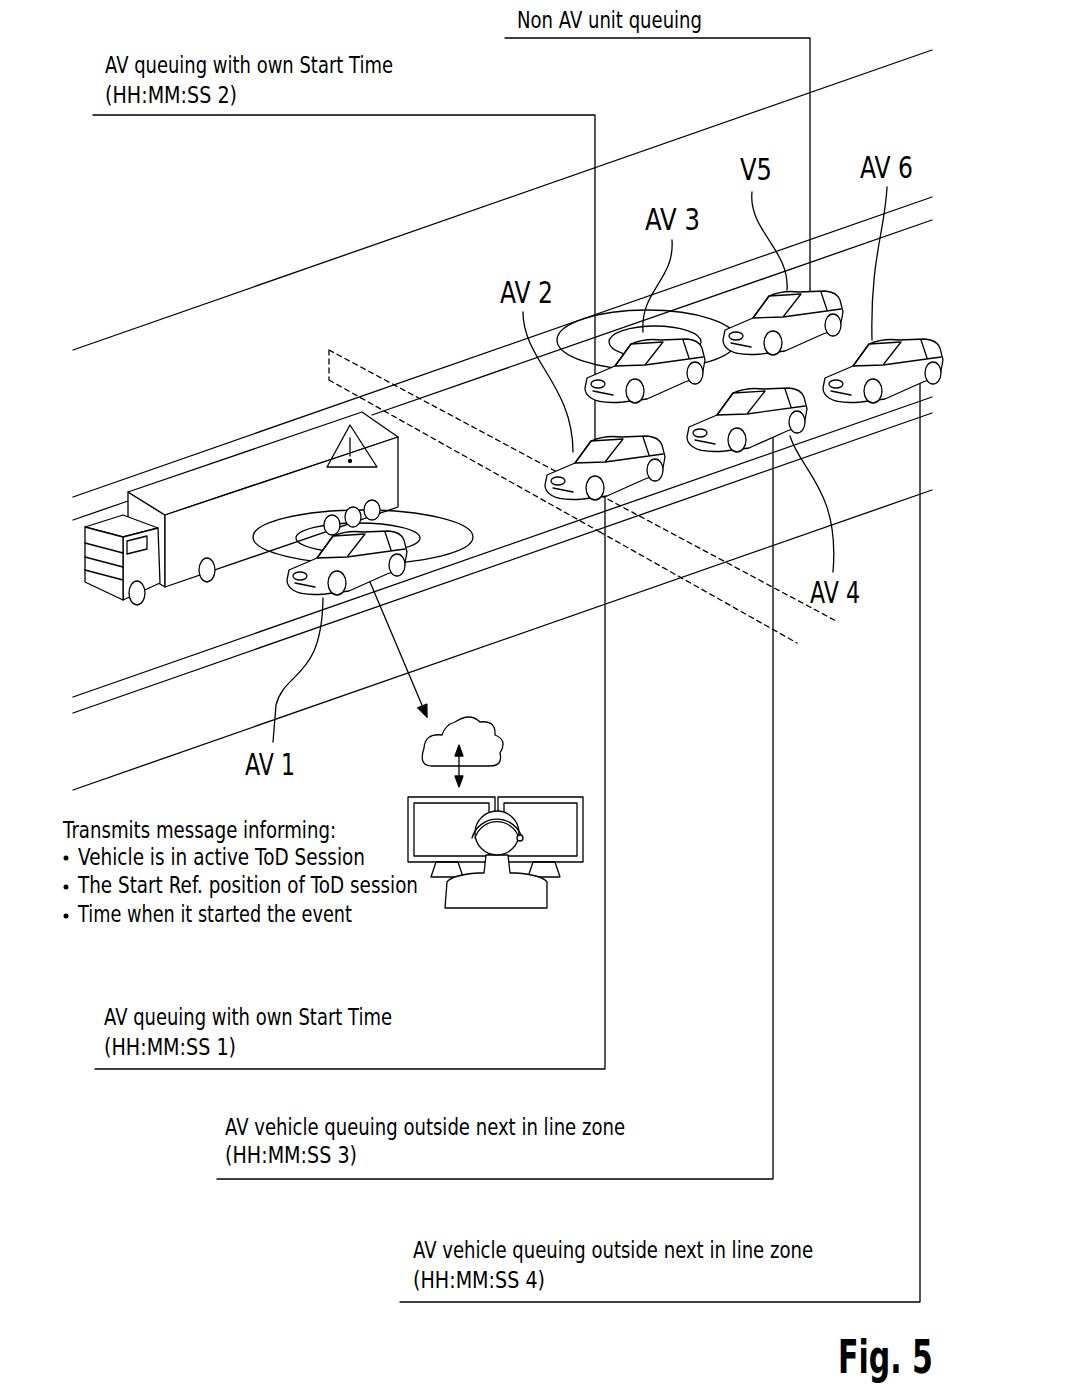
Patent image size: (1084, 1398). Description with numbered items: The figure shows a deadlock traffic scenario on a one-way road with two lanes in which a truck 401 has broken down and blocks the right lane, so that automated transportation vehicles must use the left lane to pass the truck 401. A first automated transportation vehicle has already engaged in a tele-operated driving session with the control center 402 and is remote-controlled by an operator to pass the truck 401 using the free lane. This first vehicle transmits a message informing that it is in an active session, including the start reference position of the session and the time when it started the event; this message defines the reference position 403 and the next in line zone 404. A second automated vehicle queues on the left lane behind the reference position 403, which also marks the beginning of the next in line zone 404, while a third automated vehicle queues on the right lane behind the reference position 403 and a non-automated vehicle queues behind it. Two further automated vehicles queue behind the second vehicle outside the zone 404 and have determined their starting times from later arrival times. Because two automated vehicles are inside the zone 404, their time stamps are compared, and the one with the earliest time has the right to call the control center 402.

The truck 401 is at (140, 492).
The control center 402 is at (410, 822).
The reference position 403 is at (598, 522).
The next in line zone 404 is at (653, 547).